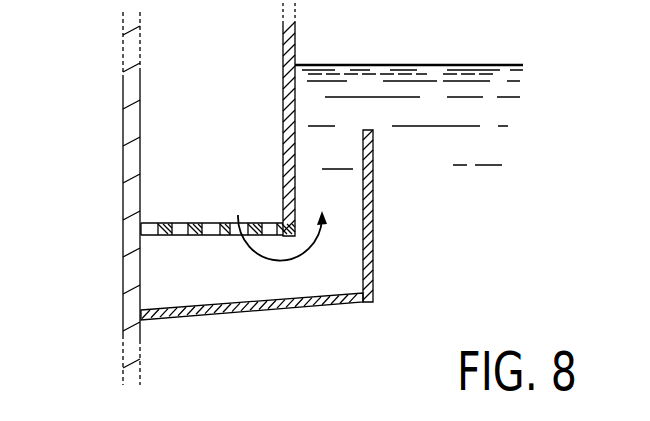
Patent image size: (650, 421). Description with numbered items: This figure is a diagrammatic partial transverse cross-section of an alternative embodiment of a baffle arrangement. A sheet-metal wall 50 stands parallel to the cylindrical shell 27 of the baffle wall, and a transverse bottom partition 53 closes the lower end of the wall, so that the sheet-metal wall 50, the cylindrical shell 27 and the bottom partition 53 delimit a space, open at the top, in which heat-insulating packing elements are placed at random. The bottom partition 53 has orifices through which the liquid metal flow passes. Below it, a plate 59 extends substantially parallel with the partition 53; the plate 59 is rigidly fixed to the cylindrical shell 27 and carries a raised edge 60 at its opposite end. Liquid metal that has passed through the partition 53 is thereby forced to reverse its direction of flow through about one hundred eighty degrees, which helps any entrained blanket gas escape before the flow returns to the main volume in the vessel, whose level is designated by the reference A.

The cylindrical shell 27 is at (130, 275).
The sheet-metal wall 50 is at (282, 95).
The bottom partition 53 is at (192, 223).
The plate 59 is at (250, 311).
The raised edge 60 is at (373, 217).
The level of the main volume A is at (480, 65).